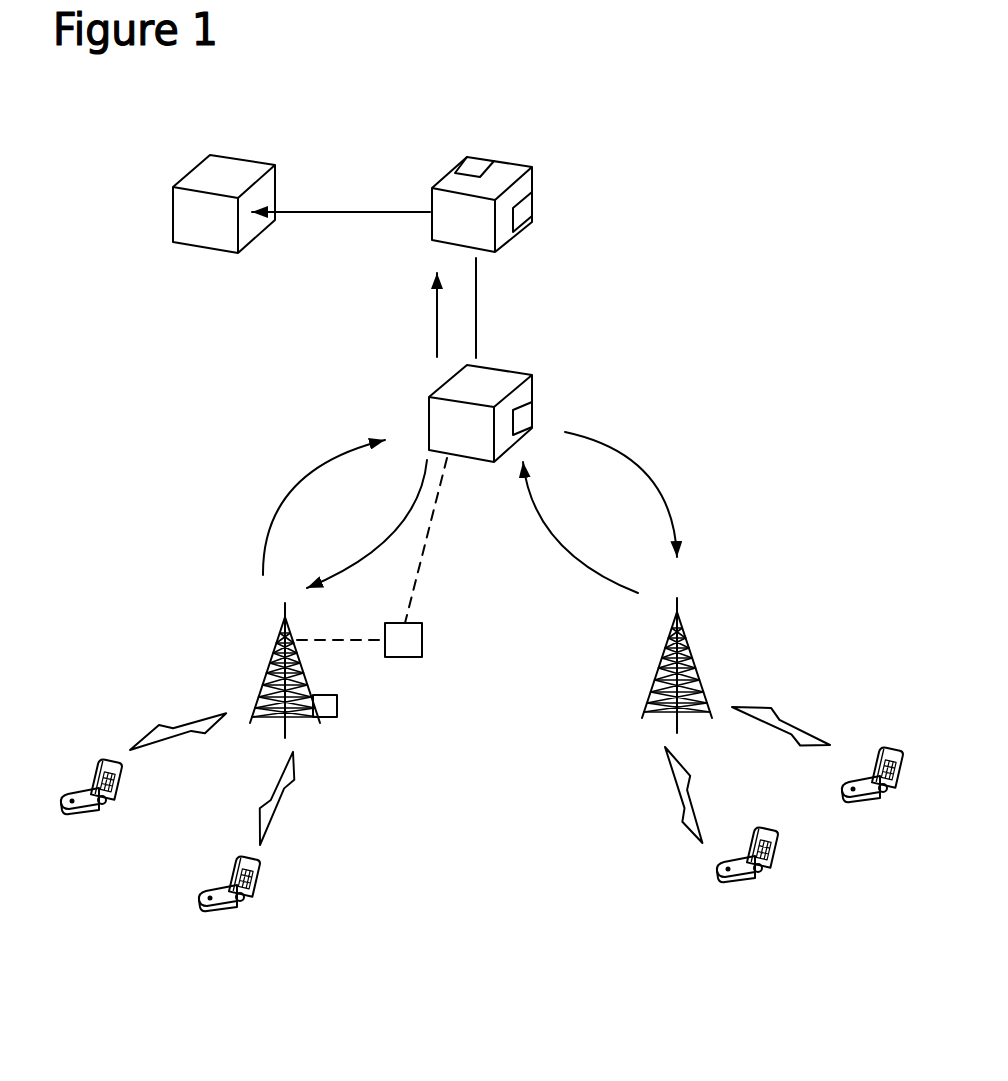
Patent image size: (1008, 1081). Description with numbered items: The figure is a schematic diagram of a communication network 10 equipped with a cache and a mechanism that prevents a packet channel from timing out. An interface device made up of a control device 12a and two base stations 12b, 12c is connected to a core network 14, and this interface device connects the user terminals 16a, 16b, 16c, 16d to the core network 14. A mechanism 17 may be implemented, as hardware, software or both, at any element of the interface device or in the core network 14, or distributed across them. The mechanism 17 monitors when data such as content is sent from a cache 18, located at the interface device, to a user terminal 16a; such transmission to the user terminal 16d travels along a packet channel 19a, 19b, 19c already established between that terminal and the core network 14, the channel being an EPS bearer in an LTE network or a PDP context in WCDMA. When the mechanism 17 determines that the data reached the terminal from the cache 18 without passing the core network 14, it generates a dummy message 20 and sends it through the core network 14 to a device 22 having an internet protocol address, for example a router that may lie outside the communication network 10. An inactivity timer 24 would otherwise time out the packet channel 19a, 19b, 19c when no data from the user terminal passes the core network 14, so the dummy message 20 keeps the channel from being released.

The communication network 10 is at (168, 440).
The control device 12a is at (543, 378).
The base station 12b is at (267, 668).
The base station 12c is at (697, 658).
The core network 14 is at (535, 183).
The user terminal 16a is at (77, 782).
The user terminal 16b is at (183, 902).
The user terminal 16c is at (753, 880).
The user terminal 16d is at (878, 798).
The mechanism 17 is at (520, 423).
The cache 18 is at (408, 647).
The packet channel 19a is at (476, 308).
The packet channel 19b is at (640, 470).
The packet channel 19c is at (788, 718).
The dummy message 20 is at (437, 312).
The device 22 is at (207, 233).
The inactivity timer 24 is at (478, 165).